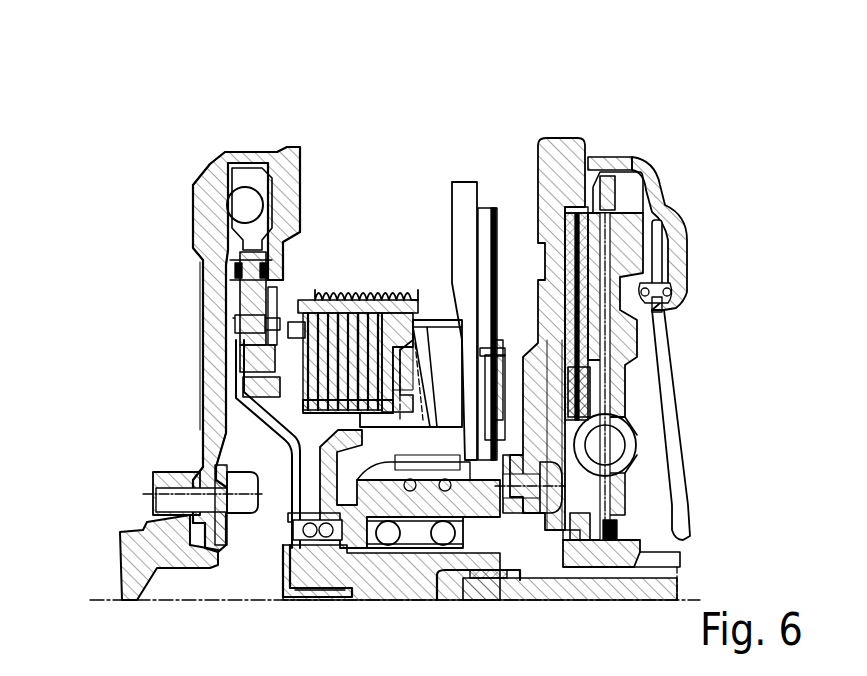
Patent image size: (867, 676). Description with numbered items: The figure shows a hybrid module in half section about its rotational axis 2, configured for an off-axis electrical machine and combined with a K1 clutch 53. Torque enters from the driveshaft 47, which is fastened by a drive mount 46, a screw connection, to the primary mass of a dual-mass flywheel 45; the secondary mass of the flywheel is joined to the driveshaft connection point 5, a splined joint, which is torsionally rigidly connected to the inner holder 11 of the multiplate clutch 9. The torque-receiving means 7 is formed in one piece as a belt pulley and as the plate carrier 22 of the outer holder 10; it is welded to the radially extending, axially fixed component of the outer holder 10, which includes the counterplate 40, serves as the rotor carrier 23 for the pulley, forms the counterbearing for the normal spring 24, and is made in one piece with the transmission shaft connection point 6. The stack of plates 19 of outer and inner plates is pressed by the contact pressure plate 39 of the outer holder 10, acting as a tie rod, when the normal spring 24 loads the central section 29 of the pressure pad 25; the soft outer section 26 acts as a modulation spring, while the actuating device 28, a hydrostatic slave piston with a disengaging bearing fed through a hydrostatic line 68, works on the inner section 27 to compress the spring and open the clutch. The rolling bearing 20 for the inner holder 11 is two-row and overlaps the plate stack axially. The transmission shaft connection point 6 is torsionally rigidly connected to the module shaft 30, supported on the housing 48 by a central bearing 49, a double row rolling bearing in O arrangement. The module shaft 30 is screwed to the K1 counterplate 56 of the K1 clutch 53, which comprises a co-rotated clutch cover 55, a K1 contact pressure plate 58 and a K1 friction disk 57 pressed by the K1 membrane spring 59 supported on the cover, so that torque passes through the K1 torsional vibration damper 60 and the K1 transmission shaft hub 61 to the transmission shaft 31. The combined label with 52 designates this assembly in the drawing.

The rotational axis 2 is at (695, 600).
The driveshaft connection point 5 is at (255, 388).
The transmission shaft connection point 6 is at (312, 546).
The torque-receiving means 7 is at (335, 258).
The multiplate clutch 9 is at (582, 78).
The outer holder 10 is at (388, 112).
The inner holder 11 is at (418, 372).
The stack of plates 19 is at (360, 303).
The rolling bearing 20 is at (298, 550).
The plate carrier 22 is at (322, 289).
The rotor carrier 23 is at (328, 552).
The normal spring 24 is at (450, 345).
The pressure pad 25 is at (615, 112).
The outer section 26 is at (566, 197).
The inner section 27 is at (538, 280).
The actuating device 28 is at (373, 557).
The central section 29 is at (597, 175).
The module shaft 30 is at (455, 574).
The transmission shaft 31 is at (612, 580).
The contact pressure plate 39 is at (293, 303).
The counterplate 40 is at (367, 300).
The dual-mass flywheel 45 is at (195, 196).
The drive mount 46 is at (192, 474).
The driveshaft 47 is at (128, 535).
The housing 48 is at (503, 580).
The central bearing 49 is at (409, 556).
The hybrid drive 52 is at (582, 78).
The K1 clutch 53 is at (757, 157).
The clutch cover 55 is at (648, 160).
The K1 counterplate 56 is at (668, 205).
The K1 friction disk 57 is at (642, 255).
The K1 contact pressure plate 58 is at (668, 303).
The K1 membrane spring 59 is at (662, 336).
The K1 torsional vibration damper 60 is at (645, 440).
The K1 transmission shaft hub 61 is at (605, 550).
The hydrostatic line 68 is at (540, 578).